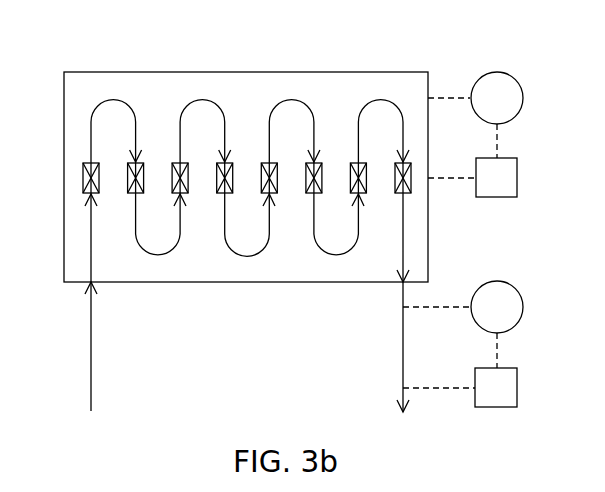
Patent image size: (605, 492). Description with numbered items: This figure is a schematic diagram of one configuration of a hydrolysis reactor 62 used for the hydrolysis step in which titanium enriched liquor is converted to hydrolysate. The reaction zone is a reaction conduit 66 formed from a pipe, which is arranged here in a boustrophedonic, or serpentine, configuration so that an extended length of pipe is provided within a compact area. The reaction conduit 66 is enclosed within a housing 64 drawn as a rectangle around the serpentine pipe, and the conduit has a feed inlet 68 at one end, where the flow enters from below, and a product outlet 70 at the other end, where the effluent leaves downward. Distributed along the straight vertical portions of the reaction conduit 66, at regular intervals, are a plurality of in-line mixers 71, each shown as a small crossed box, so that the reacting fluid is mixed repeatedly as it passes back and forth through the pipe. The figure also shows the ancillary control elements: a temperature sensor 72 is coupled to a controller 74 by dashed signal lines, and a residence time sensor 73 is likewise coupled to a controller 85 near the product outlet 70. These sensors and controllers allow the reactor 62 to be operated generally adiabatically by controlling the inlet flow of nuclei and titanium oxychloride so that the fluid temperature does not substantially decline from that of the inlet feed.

The hydrolysis reactor 62 is at (445, 56).
The reactor vessel / housing 64 is at (64, 121).
The reaction conduit 66 is at (134, 101).
The feed inlet 68 is at (91, 313).
The product outlet 70 is at (403, 298).
The in-line mixer 71 is at (237, 178).
The temperature sensor 72 is at (523, 97).
The residence time sensor 73 is at (505, 281).
The controller 74 is at (517, 178).
The controller 85 is at (517, 388).